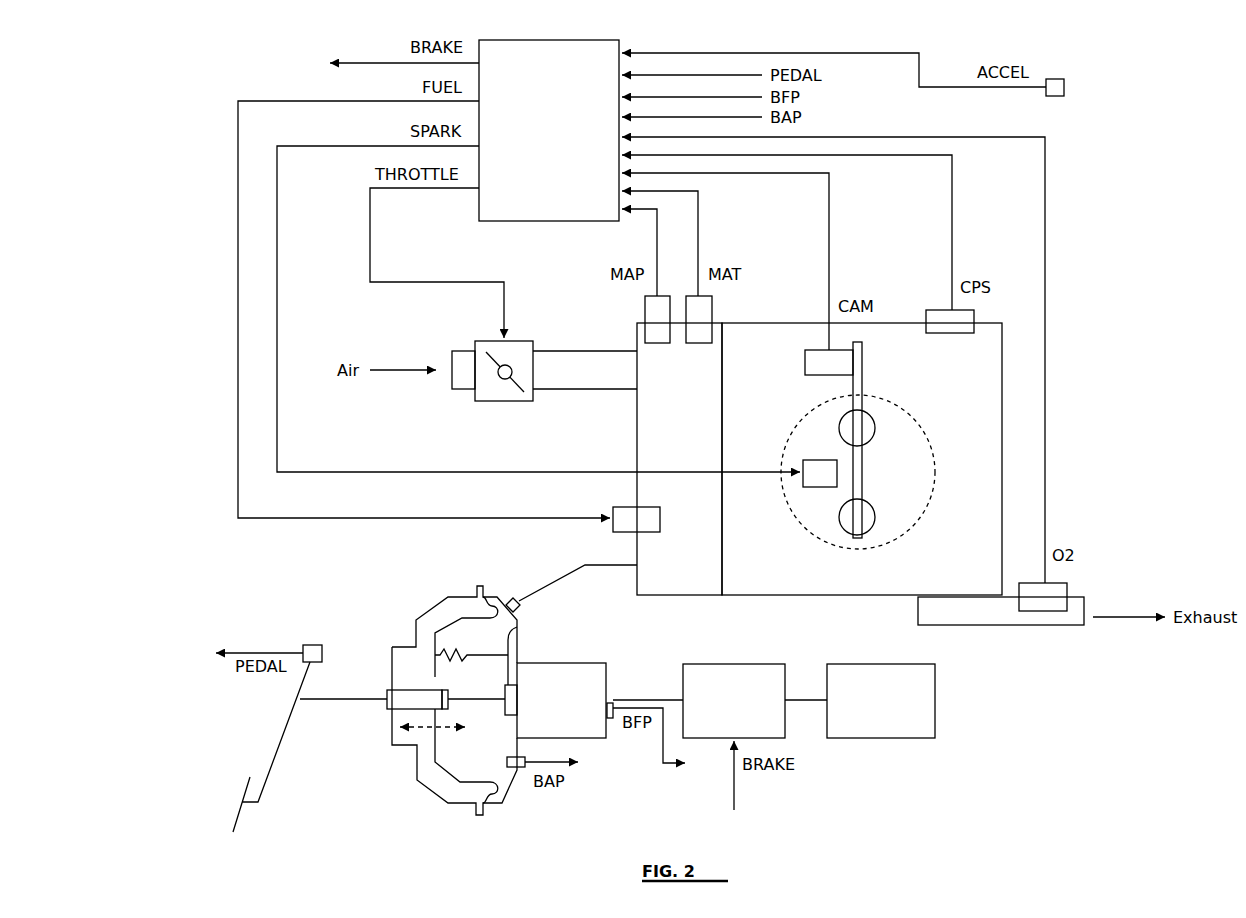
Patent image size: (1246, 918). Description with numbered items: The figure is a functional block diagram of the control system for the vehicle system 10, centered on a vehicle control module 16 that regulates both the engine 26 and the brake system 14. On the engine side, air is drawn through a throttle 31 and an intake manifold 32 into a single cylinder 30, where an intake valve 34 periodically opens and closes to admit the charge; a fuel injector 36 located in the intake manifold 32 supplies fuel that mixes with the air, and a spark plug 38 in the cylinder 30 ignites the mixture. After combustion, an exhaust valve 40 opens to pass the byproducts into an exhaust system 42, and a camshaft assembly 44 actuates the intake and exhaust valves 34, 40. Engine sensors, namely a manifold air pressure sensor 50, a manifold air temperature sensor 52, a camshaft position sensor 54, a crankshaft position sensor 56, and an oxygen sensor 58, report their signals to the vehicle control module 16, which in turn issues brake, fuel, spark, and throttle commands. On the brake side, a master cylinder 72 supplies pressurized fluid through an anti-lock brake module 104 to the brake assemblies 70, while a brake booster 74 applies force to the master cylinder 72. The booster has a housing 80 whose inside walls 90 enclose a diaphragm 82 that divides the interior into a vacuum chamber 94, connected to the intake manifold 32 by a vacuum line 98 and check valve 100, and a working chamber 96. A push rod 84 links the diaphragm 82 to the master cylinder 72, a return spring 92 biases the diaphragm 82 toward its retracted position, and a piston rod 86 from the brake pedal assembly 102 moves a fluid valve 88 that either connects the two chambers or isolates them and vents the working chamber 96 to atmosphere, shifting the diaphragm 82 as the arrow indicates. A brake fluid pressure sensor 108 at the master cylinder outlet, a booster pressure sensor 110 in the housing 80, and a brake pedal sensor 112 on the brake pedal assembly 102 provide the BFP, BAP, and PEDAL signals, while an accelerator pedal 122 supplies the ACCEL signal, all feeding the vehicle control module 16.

The vehicle system 10 is at (103, 78).
The brake system 14 is at (295, 580).
The vehicle control module 16 is at (545, 222).
The internal combustion engine 26 is at (784, 320).
The cylinder 30 is at (920, 520).
The throttle 31 is at (508, 401).
The intake manifold 32 is at (675, 597).
The intake valve 34 is at (842, 418).
The fuel injector 36 is at (650, 532).
The spark plug 38 is at (801, 462).
The exhaust valve 40 is at (840, 533).
The exhaust system 42 is at (980, 625).
The camshaft assembly 44 is at (862, 465).
The manifold air pressure sensor 50 is at (645, 305).
The manifold air temperature sensor 52 is at (712, 308).
The camshaft position sensor 54 is at (805, 362).
The crankshaft position sensor 56 is at (968, 333).
The oxygen sensor 58 is at (1040, 611).
The brake assemblies 70 is at (878, 664).
The master cylinder 72 is at (577, 663).
The brake booster 74 is at (456, 711).
The housing 80 is at (418, 618).
The diaphragm 82 is at (456, 771).
The push rod 84 is at (482, 698).
The piston rod 86 is at (352, 701).
The fluid valve 88 is at (400, 690).
The inside walls 90 is at (424, 780).
The return spring 92 is at (518, 627).
The vacuum chamber 94 is at (471, 645).
The working chamber 96 is at (432, 689).
The vacuum line 98 is at (572, 567).
The check valve 100 is at (510, 600).
The brake pedal assembly 102 is at (280, 742).
The anti-lock brake module 104 is at (735, 664).
The brake fluid pressure sensor 108 is at (612, 700).
The booster pressure sensor 110 is at (518, 767).
The brake pedal sensor 112 is at (322, 650).
The accelerator pedal 122 is at (1064, 87).